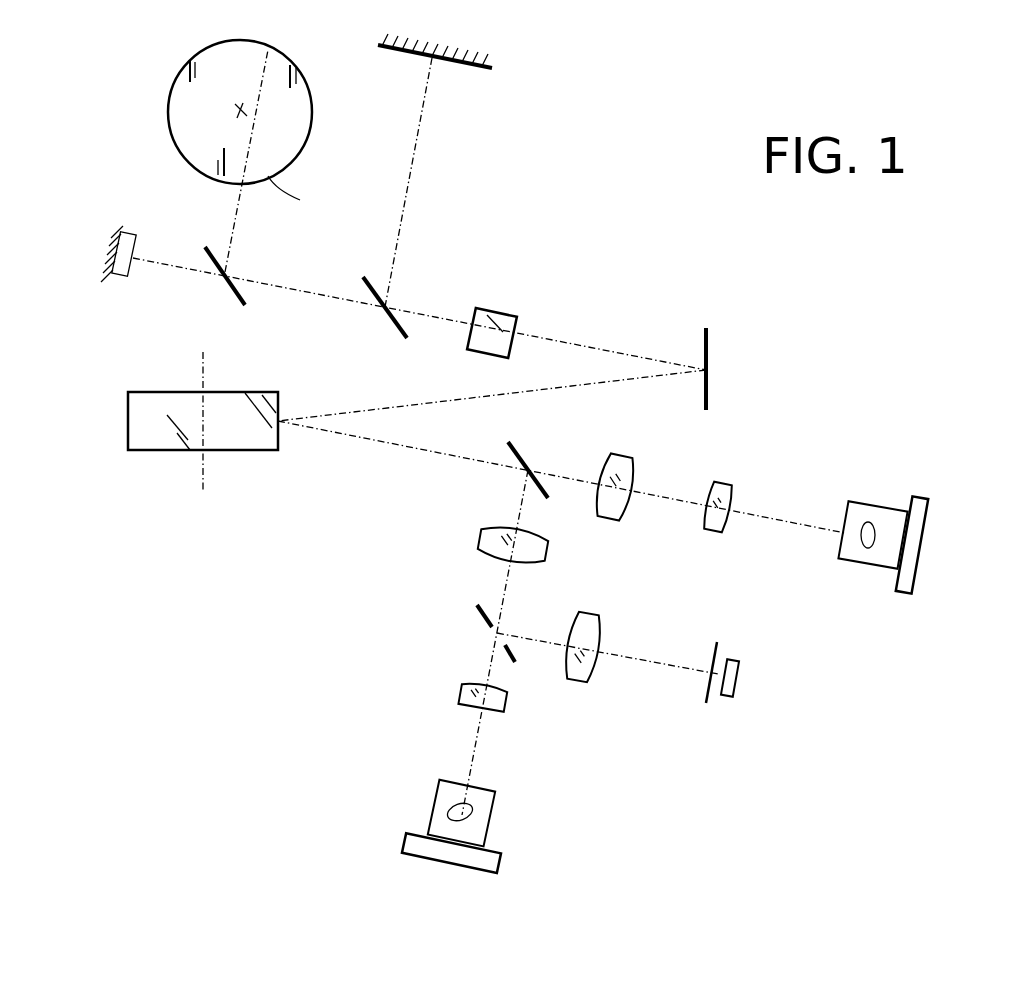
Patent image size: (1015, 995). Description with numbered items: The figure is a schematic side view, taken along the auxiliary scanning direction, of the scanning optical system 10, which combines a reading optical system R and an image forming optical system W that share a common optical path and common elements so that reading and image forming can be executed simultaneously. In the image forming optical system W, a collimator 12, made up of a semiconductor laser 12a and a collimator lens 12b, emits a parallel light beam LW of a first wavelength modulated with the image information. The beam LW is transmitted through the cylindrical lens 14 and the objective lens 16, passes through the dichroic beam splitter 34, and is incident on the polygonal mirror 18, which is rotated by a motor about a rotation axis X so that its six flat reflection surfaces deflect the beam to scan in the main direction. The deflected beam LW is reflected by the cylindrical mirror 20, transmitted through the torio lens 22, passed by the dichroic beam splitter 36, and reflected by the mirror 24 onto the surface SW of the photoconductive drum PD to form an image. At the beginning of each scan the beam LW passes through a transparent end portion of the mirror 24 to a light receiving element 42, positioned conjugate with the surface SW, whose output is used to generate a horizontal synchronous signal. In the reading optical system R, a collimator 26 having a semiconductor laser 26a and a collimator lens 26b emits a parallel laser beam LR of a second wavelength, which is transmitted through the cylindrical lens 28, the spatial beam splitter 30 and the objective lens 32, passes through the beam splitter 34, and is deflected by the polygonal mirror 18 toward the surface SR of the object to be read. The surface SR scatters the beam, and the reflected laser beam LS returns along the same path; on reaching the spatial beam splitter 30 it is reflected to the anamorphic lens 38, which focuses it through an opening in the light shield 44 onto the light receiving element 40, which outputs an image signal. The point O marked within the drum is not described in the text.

The scanning optical system 10 is at (679, 330).
The collimator 12 is at (908, 527).
The semiconductor laser 12a is at (918, 547).
The collimator lens 12b is at (870, 550).
The cylindrical lens 14 is at (724, 488).
The objective lens 16 is at (627, 517).
The polygonal mirror 18 is at (128, 428).
The cylindrical mirror 20 is at (706, 395).
The torio lens 22 is at (500, 312).
The mirror 24 is at (240, 302).
The collimator 26 is at (469, 826).
The semiconductor laser 26a is at (425, 846).
The collimator lens 26b is at (478, 812).
The cylindrical lens 28 is at (505, 710).
The spatial beam splitter 30 is at (480, 608).
The objective lens 32 is at (485, 552).
The beam splitter 34 is at (522, 455).
The beam splitter 36 is at (395, 325).
The anamorphic lens 38 is at (605, 628).
The light receiving element 40 is at (738, 692).
The light receiving element 42 is at (135, 232).
The light shield 44 is at (711, 703).
The photoconductive drum PD is at (302, 72).
The scanning surface SW is at (305, 194).
The surface of the object to be read SR is at (492, 62).
The center O is at (240, 110).
The rotation axis X is at (202, 468).
The image forming optical system W is at (772, 501).
The reading optical system R is at (460, 648).
The light beam LW is at (249, 214).
The laser beam LR is at (432, 118).
The reflected laser beam LS is at (416, 195).